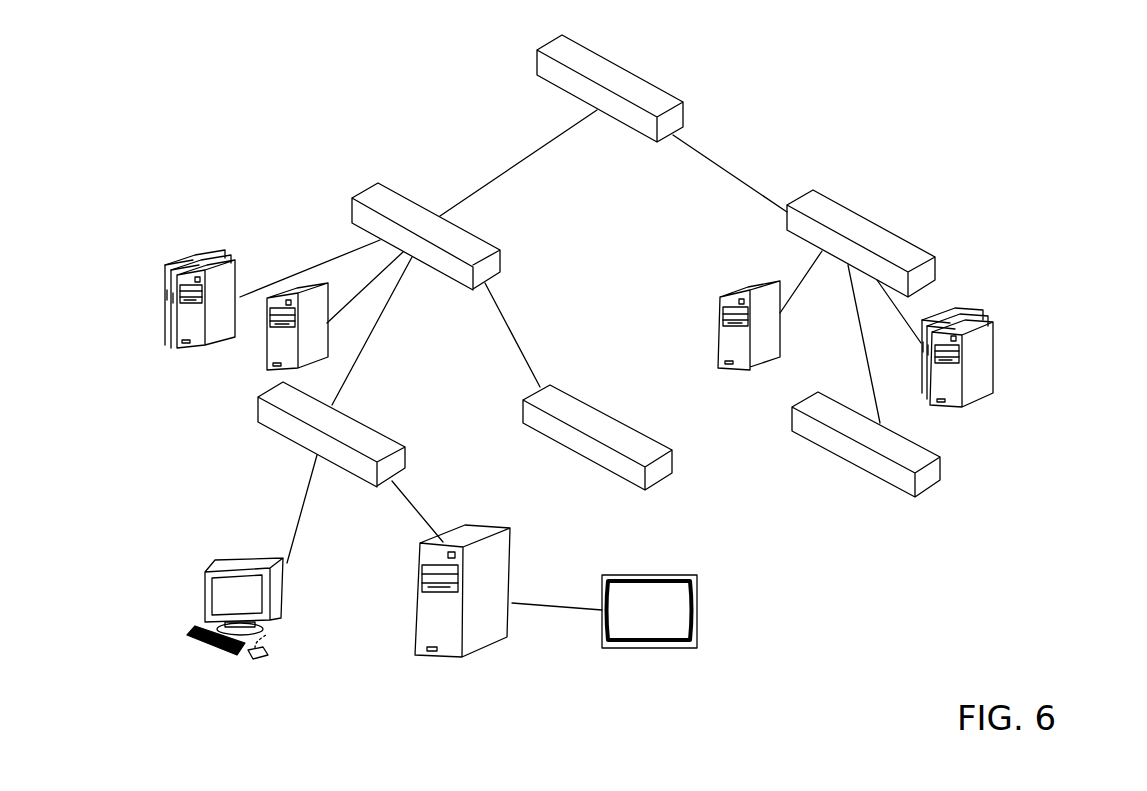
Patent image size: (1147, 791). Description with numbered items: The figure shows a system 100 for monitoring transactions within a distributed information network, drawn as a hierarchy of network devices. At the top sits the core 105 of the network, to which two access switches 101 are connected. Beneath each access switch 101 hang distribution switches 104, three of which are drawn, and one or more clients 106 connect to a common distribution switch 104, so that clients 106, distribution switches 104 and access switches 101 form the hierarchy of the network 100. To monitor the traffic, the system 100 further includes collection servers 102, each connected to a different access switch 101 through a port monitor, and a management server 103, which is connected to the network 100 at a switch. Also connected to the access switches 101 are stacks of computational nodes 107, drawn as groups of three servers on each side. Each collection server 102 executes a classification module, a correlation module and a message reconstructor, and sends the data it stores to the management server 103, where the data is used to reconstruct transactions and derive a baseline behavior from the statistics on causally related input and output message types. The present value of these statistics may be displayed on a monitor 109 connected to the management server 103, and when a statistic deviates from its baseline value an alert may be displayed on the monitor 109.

The system 100 is at (1002, 87).
The access switch 101 is at (478, 247).
The collection server 102 is at (282, 355).
The management server 103 is at (485, 528).
The distribution switch 104 is at (383, 443).
The core 105 is at (633, 70).
The client 106 is at (263, 598).
The computational node 107 is at (187, 258).
The monitor 109 is at (688, 610).